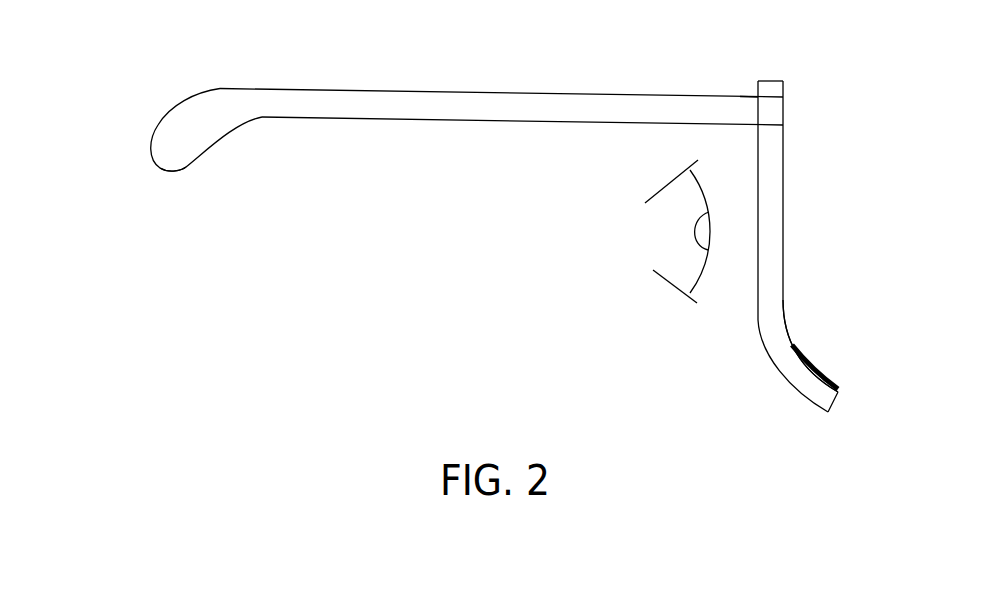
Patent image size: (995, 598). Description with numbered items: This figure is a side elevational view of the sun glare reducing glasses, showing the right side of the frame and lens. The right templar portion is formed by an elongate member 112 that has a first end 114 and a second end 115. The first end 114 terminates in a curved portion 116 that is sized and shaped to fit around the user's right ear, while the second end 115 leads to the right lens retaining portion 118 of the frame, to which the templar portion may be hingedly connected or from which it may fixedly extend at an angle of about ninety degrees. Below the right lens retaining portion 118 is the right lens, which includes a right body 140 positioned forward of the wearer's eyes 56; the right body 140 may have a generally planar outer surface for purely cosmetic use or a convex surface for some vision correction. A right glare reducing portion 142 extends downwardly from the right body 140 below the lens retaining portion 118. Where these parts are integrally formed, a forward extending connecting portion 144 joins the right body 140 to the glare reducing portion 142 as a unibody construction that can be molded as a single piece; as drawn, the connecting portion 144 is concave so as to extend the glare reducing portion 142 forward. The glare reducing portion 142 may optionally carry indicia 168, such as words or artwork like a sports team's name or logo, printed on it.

The elongate member 112 is at (458, 107).
The first end 114 is at (183, 106).
The curved portion 116 is at (188, 173).
The second end 115 is at (727, 95).
The right lens retaining portion 118 is at (781, 81).
The right body 140 is at (782, 172).
The connecting portion 144 is at (782, 312).
The indicia 168 is at (812, 368).
The right glare reducing portion 142 is at (840, 390).
The eyes 56 is at (667, 282).